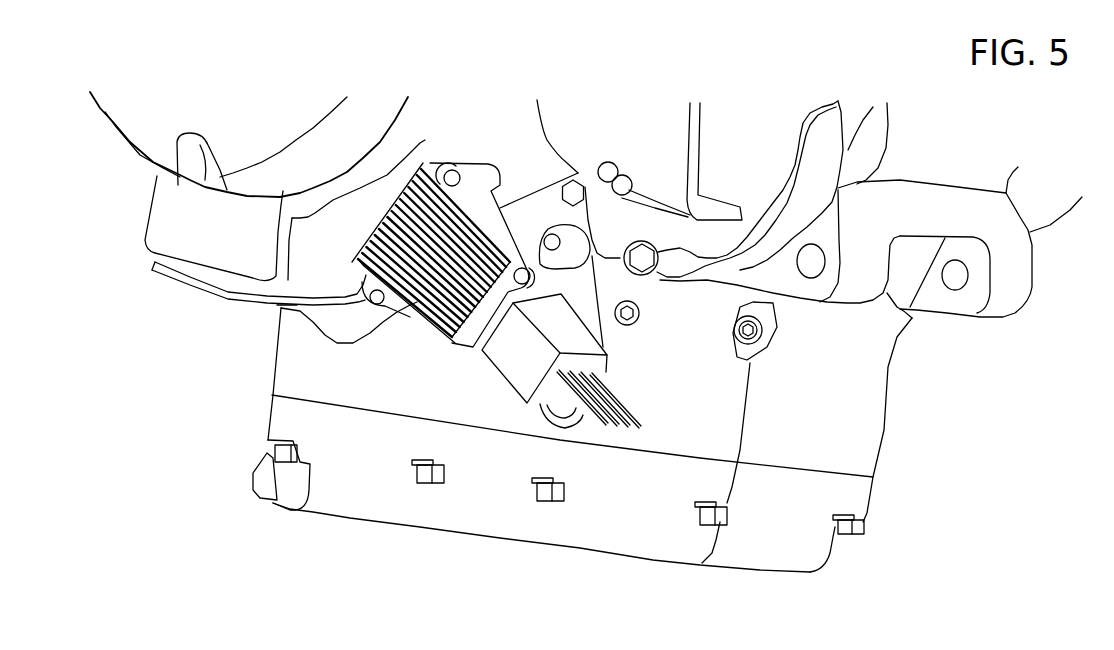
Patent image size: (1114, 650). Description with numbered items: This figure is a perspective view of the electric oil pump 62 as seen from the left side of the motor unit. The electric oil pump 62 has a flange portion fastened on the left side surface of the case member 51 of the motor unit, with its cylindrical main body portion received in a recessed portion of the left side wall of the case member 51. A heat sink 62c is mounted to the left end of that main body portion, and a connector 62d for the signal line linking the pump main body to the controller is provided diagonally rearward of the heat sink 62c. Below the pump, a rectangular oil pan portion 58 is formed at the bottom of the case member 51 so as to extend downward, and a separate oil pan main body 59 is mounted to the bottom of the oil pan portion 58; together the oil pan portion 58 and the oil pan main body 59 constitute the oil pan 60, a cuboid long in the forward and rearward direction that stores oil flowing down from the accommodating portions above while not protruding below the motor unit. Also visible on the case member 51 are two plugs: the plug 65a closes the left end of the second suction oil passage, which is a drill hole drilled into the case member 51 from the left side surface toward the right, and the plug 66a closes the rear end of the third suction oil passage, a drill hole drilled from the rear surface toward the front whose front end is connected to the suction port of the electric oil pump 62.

The case member 51 is at (228, 293).
The oil pan portion 58 is at (820, 425).
The oil pan main body 59 is at (817, 498).
The oil pan 60 is at (955, 442).
The electric oil pump 62 is at (427, 343).
The heat sink 62c is at (444, 347).
The connector 62d is at (523, 362).
The plug 65a is at (640, 457).
The plug 66a is at (875, 362).